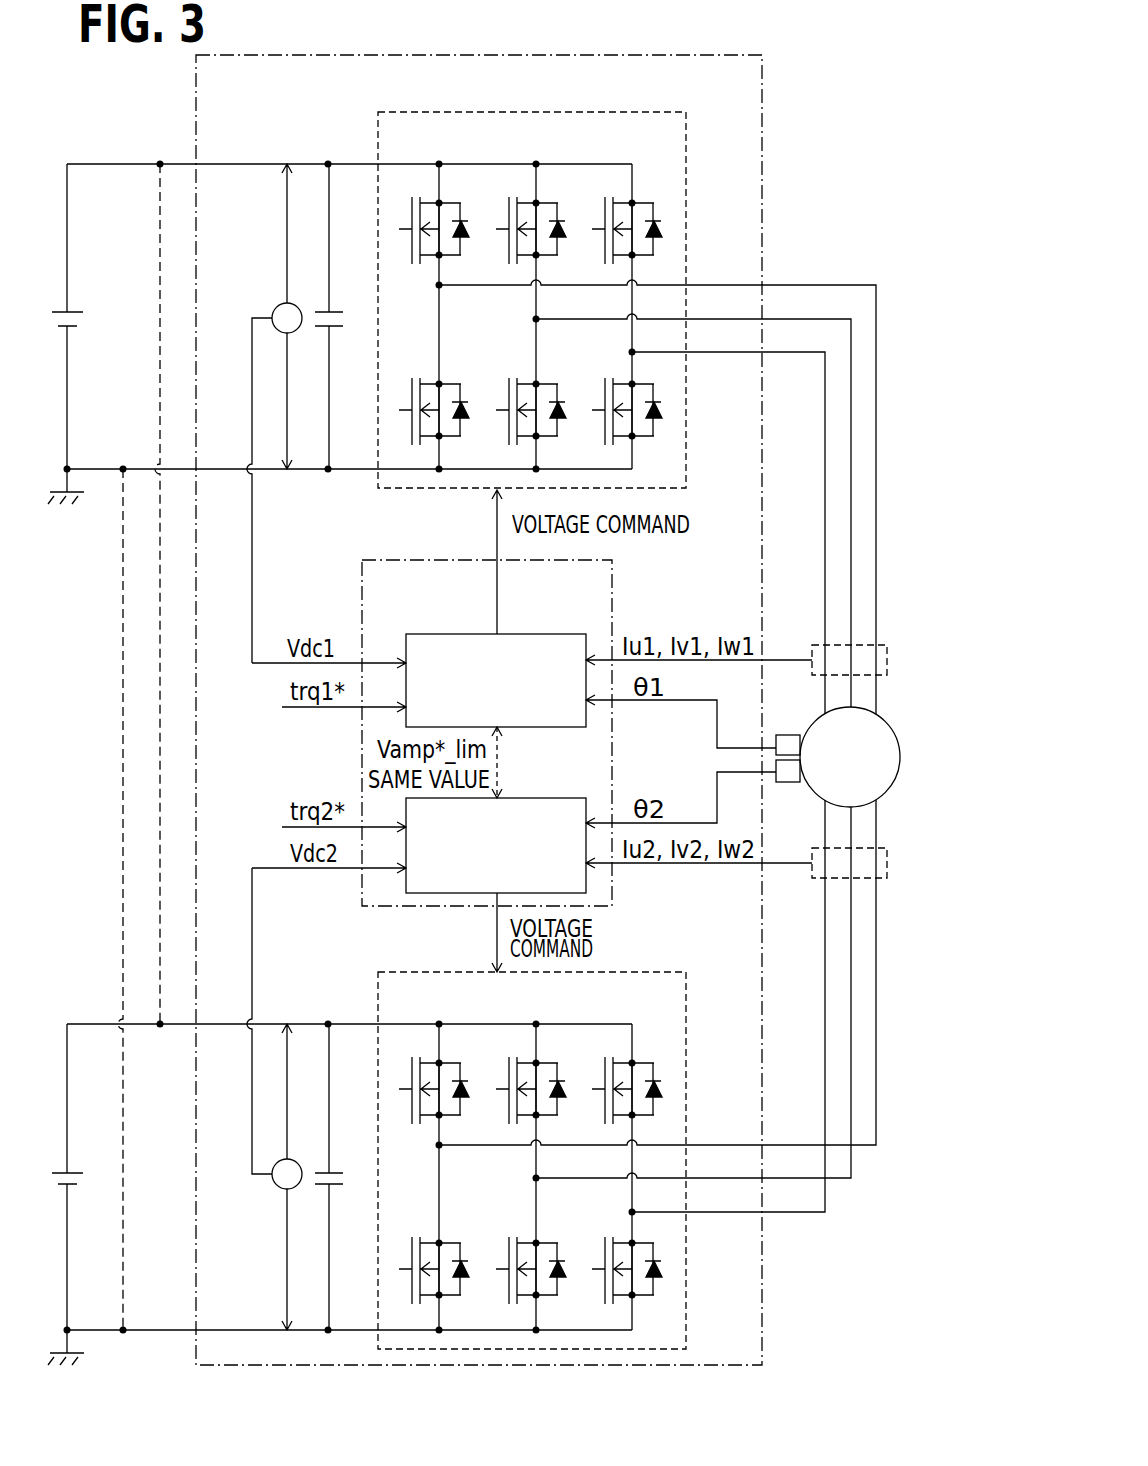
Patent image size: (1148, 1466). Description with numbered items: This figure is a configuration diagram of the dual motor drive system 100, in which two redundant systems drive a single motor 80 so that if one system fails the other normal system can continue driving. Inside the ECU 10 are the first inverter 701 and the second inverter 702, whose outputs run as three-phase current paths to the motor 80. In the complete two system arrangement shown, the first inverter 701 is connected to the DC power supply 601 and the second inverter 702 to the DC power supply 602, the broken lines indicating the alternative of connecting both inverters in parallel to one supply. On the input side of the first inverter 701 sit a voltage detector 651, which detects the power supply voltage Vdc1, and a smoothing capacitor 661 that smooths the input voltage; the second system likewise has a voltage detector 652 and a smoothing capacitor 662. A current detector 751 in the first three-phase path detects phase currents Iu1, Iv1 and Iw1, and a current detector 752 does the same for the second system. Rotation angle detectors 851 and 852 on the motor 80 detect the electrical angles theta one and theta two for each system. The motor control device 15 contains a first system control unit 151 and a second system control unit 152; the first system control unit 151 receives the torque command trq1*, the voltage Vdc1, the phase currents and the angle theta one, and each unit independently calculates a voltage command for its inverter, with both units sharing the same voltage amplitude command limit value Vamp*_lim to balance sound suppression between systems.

The ECU 10 is at (292, 54).
The dual motor drive system 100 is at (831, 116).
The motor control device 15 is at (424, 560).
The first system control unit 151 is at (546, 634).
The second system control unit 152 is at (546, 798).
The first inverter 701 is at (619, 112).
The second inverter 702 is at (619, 972).
The DC power supply 601 is at (74, 310).
The DC power supply 602 is at (74, 1171).
The voltage detector 651 is at (277, 306).
The voltage detector 652 is at (278, 1189).
The smoothing capacitor 661 is at (333, 309).
The smoothing capacitor 662 is at (333, 1170).
The current detector 751 is at (888, 660).
The current detector 752 is at (888, 863).
The motor 80 is at (901, 757).
The rotation angle detector 851 is at (788, 735).
The rotation angle detector 852 is at (790, 784).